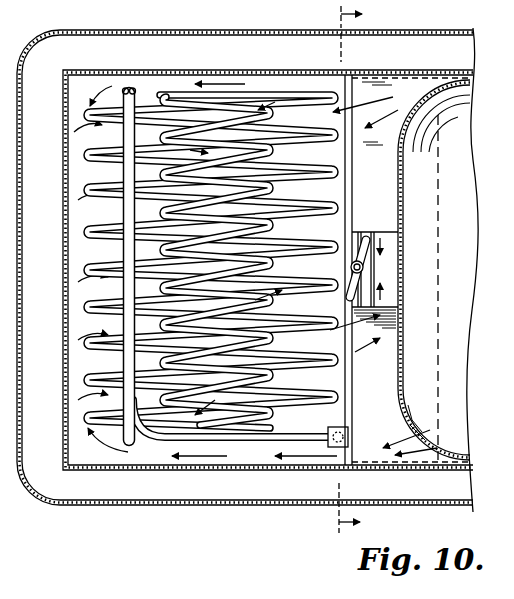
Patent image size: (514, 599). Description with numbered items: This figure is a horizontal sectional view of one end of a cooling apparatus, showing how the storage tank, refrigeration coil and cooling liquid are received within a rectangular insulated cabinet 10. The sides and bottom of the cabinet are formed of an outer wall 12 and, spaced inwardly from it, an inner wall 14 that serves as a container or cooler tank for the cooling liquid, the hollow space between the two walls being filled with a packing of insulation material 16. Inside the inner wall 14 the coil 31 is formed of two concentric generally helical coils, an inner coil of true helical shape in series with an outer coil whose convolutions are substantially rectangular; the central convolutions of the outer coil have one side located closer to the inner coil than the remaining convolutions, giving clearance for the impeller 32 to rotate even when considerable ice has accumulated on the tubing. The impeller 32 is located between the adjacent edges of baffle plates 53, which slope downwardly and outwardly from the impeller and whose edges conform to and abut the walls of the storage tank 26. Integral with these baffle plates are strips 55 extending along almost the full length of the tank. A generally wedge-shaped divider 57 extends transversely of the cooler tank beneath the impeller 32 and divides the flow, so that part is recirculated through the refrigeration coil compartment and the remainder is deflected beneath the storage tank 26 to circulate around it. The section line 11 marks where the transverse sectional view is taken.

The insulated cabinet 10 is at (247, 296).
The section line 11— 11 is at (341, 274).
The outer wall 12 is at (207, 506).
The inner wall 14 is at (140, 471).
The insulation material 16 is at (51, 371).
The storage tank 26 is at (400, 366).
The coil 31 is at (85, 233).
The impeller 32 is at (352, 288).
The baffle plates 53 is at (380, 197).
The strips 55 is at (457, 80).
The divider 57 is at (376, 271).